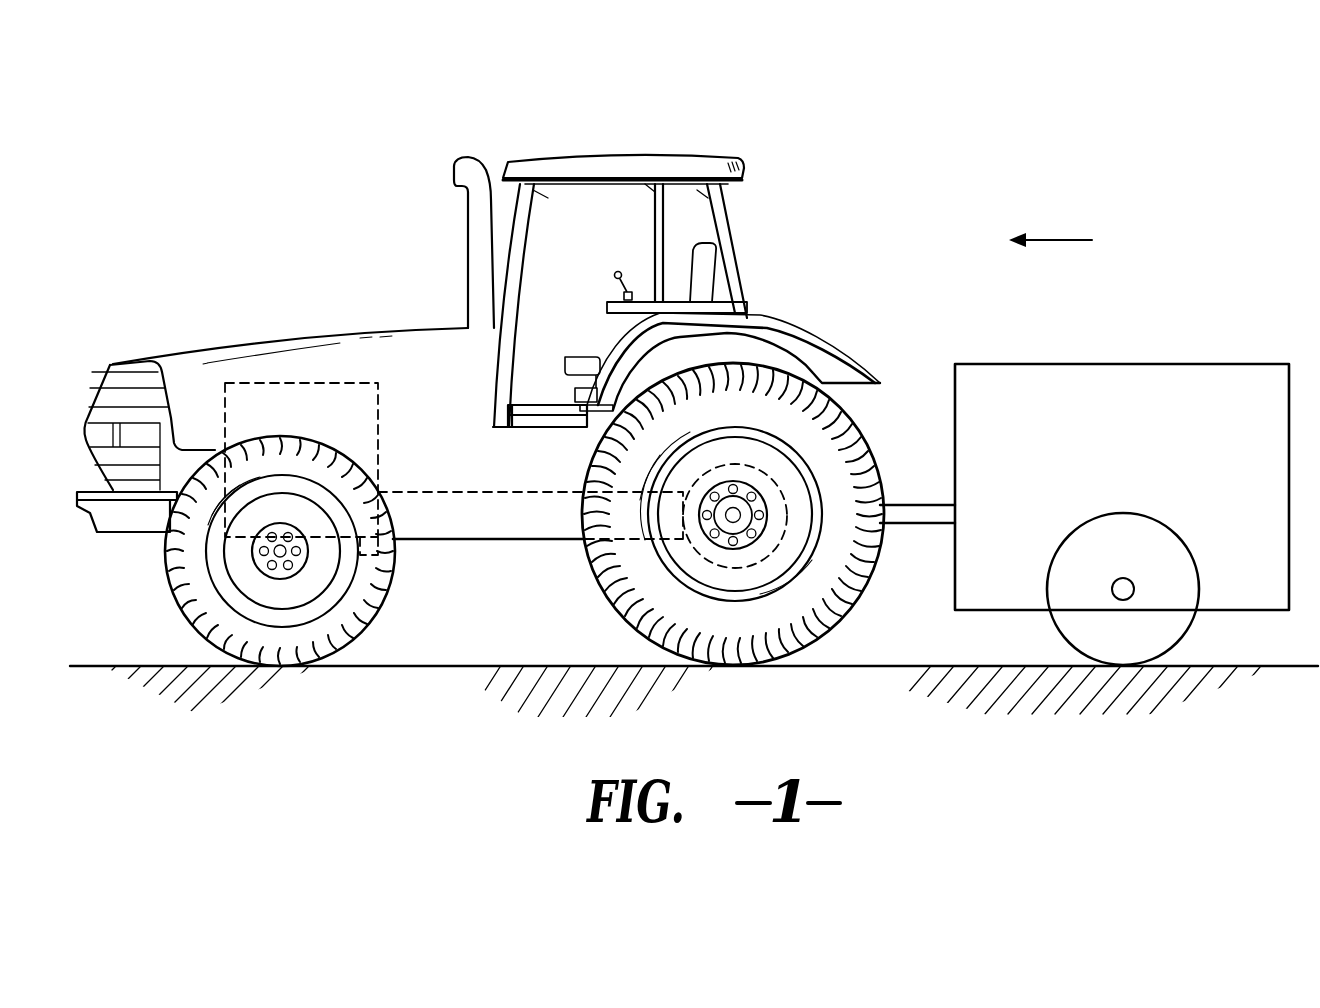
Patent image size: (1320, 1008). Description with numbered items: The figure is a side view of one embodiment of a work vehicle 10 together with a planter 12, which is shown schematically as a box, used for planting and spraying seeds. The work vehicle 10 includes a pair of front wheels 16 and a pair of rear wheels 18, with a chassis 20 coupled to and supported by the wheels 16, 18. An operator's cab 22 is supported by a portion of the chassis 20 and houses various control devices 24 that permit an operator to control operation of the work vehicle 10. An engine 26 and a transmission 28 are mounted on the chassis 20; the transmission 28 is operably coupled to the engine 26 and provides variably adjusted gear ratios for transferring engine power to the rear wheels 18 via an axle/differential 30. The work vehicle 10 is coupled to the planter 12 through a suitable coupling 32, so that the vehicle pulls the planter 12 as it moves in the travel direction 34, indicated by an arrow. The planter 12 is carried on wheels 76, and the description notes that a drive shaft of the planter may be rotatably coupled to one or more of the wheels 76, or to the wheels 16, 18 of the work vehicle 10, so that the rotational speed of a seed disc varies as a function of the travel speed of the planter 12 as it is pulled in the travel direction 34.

The work vehicle 10 is at (256, 219).
The planter 12 is at (1108, 453).
The front wheels 16 is at (167, 558).
The rear wheels 18 is at (870, 583).
The chassis 20 is at (450, 541).
The operator's cab 22 is at (740, 253).
The control devices 24 is at (618, 272).
The engine 26 is at (280, 383).
The transmission 28 is at (495, 490).
The axle/differential 30 is at (800, 517).
The coupling 32 is at (898, 528).
The travel direction 34 is at (1061, 239).
The wheels of the planter 76 is at (1199, 614).